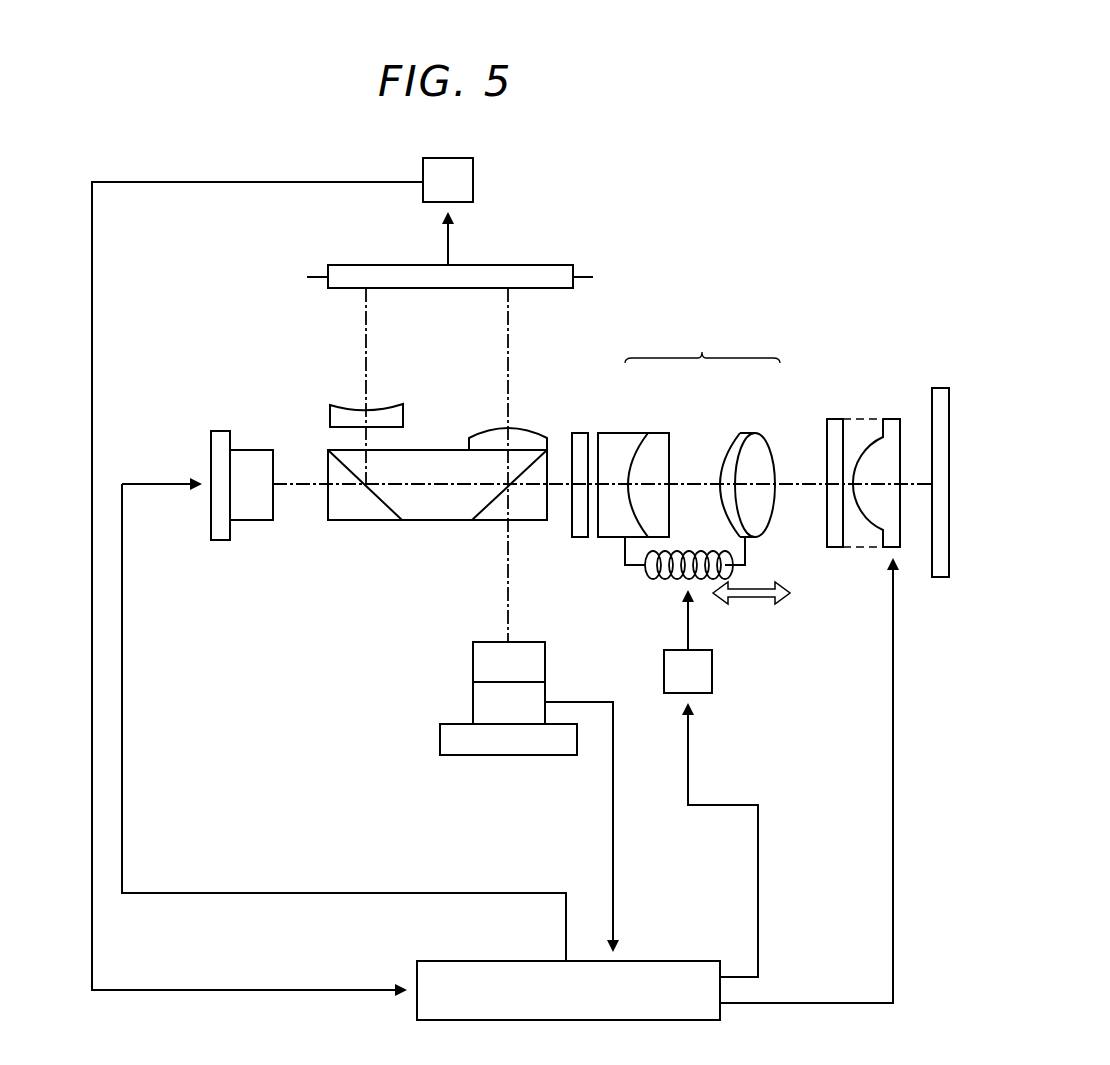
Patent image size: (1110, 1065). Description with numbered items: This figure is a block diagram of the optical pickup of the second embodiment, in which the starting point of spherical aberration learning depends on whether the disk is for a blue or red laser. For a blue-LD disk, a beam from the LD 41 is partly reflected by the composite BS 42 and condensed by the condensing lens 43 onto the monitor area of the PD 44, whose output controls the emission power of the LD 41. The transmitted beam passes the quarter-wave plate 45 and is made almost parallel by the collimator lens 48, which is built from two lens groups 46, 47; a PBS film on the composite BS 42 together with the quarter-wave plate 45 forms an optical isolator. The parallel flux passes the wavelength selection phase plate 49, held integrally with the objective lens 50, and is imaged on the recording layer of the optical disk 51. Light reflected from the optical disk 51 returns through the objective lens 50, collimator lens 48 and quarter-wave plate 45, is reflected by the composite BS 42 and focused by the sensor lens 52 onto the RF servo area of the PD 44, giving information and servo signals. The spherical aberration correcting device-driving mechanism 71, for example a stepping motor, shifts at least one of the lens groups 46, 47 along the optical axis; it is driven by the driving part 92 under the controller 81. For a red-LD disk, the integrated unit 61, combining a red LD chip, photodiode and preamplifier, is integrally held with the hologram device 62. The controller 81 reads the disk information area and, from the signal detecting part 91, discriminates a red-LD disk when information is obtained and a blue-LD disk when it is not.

The LD (semiconductor laser) 41 is at (258, 449).
The composite BS 42 is at (362, 521).
The condensing lens 43 is at (492, 423).
The PD (photodiode) 44 is at (557, 265).
The λ/4 plate 45 is at (580, 432).
The lens group 46 is at (636, 432).
The lens group 47 is at (757, 432).
The collimator lens 48 is at (702, 342).
The wavelength selection phase plate 49 is at (835, 418).
The objective lens 50 is at (889, 418).
The optical disk 51 is at (944, 388).
The sensor lens 52 is at (344, 404).
The integrated unit 61 is at (472, 701).
The hologram device 62 is at (472, 657).
The spherical aberration correcting device-driving mechanism 71 is at (649, 582).
The controller 81 is at (690, 960).
The signal detecting part 91 is at (473, 170).
The driving part 92 is at (712, 670).